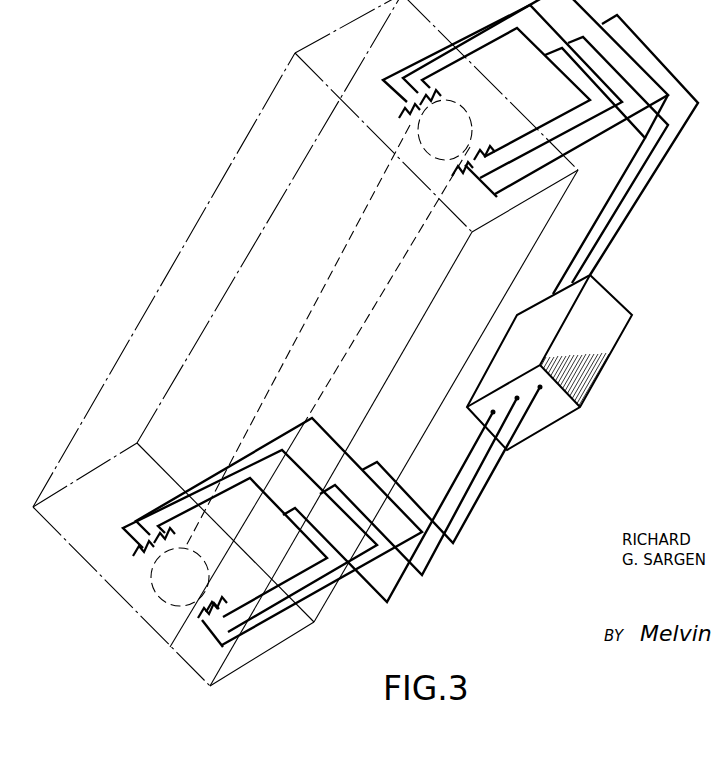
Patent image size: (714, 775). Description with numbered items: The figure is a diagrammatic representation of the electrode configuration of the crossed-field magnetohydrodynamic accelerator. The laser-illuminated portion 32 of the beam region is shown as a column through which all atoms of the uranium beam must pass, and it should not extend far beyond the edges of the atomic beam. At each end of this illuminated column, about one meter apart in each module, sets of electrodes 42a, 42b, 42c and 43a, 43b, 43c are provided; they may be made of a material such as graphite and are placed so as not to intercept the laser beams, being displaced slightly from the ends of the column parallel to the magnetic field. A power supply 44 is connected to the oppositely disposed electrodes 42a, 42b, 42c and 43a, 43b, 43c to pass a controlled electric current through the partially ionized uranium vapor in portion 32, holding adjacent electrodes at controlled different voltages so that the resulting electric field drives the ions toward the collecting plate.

The illuminated portion 32 is at (131, 608).
The electrode 42a is at (143, 551).
The electrode 42b is at (123, 528).
The electrode 42c is at (158, 518).
The electrode 43a is at (403, 109).
The electrode 43b is at (384, 80).
The electrode 43c is at (438, 98).
The power supply 44 is at (613, 344).